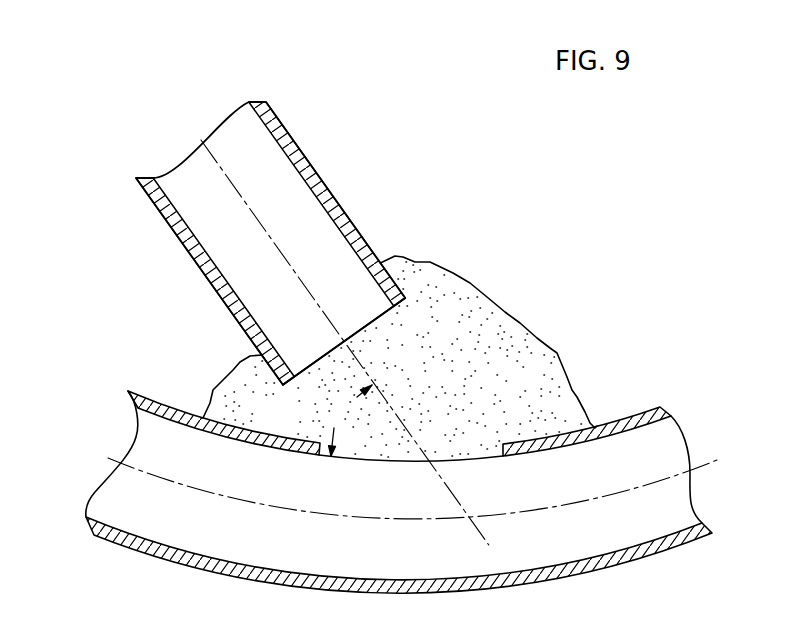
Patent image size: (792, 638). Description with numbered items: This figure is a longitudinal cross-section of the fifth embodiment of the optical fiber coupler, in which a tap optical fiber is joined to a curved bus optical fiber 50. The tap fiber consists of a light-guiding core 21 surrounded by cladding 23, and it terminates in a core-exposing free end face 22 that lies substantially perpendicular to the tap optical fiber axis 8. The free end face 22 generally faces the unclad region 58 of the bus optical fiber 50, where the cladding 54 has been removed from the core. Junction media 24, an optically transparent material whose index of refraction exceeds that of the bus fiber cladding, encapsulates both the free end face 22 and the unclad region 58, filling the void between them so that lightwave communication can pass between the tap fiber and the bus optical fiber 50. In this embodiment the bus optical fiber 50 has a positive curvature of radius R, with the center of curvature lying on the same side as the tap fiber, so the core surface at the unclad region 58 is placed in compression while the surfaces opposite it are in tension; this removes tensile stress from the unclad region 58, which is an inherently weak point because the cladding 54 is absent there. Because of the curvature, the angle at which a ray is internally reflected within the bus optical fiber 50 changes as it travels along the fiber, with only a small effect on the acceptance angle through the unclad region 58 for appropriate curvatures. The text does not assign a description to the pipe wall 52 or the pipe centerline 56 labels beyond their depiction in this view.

The tap optical fiber axis 8 is at (287, 263).
The light-guiding core 21 is at (312, 323).
The free end face 22 is at (373, 321).
The cladding 23 is at (317, 173).
The junction media 24 is at (518, 367).
The bus optical fiber 50 is at (399, 448).
The pipe wall 52 is at (611, 485).
The cladding 54 is at (158, 405).
The pipe centerline 56 is at (352, 518).
The unclad region 58 is at (372, 461).